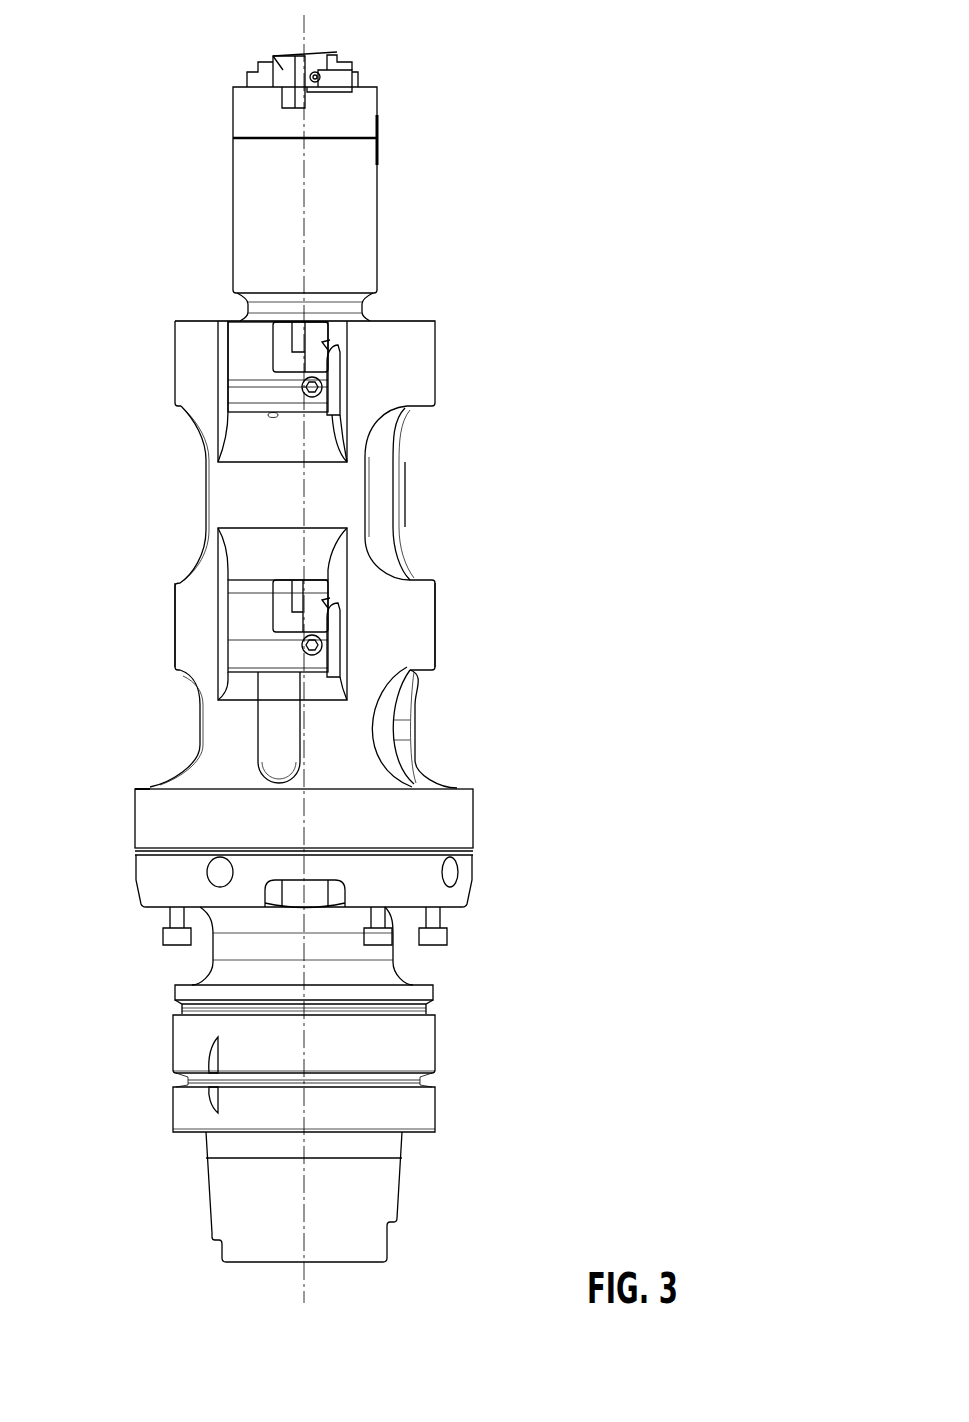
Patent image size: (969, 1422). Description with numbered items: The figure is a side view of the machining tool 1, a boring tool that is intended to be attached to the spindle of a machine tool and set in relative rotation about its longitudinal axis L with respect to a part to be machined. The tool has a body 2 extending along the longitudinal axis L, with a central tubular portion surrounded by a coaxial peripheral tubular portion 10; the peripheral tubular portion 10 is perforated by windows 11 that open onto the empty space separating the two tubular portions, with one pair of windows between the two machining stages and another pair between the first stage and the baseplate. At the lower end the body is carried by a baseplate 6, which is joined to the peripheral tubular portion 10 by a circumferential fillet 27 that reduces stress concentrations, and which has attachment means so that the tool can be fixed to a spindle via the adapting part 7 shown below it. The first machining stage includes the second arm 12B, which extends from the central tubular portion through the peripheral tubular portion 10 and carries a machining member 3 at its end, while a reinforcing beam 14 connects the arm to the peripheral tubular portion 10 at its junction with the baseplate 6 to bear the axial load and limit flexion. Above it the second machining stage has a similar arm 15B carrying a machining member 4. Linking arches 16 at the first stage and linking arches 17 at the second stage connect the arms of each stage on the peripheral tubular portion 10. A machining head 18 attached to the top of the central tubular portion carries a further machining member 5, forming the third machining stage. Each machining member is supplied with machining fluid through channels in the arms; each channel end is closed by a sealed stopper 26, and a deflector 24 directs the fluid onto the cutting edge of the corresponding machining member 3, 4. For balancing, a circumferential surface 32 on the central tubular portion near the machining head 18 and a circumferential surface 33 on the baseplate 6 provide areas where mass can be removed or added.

The machining tool 1 is at (551, 348).
The body 2 is at (436, 333).
The machining member 3 is at (298, 590).
The machining member 4 is at (297, 333).
The machining member 5 is at (303, 60).
The baseplate 6 is at (445, 810).
The adapting part 7 is at (405, 1042).
The peripheral tubular portion 10 is at (205, 413).
The window 11 is at (403, 508).
The second arm 12B is at (283, 557).
The reinforcing beam 14 is at (288, 725).
The arm 15B is at (243, 340).
The linking arch 16 is at (195, 638).
The linking arch 17 is at (190, 338).
The machining head 18 is at (346, 114).
The deflector 24 is at (333, 388).
The stopper 26 is at (310, 397).
The circumferential fillet 27 is at (200, 758).
The circumferential surface 32 is at (346, 246).
The circumferential surface 33 is at (157, 822).
The longitudinal axis L is at (303, 205).